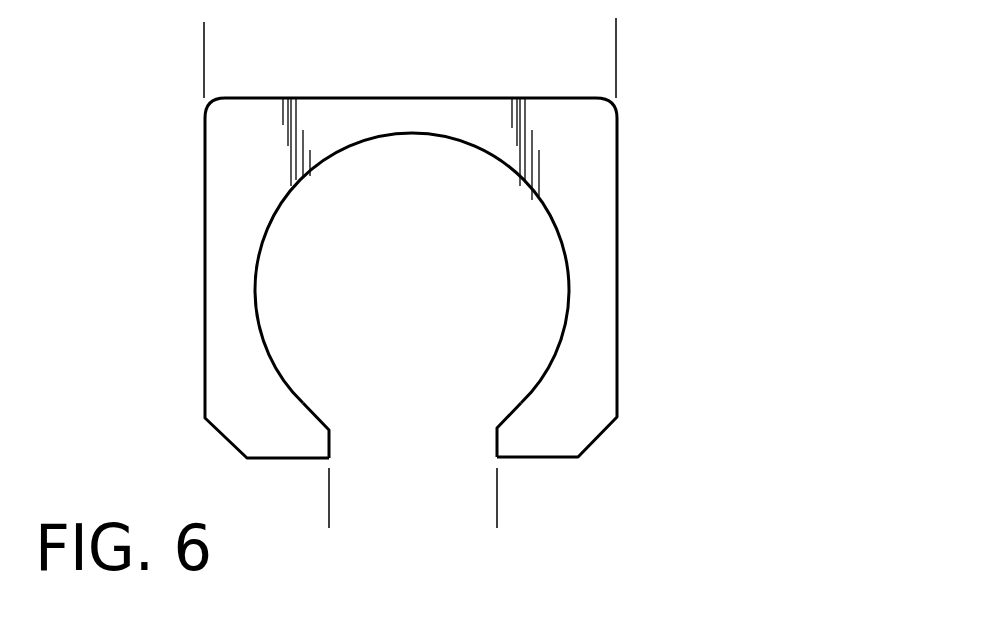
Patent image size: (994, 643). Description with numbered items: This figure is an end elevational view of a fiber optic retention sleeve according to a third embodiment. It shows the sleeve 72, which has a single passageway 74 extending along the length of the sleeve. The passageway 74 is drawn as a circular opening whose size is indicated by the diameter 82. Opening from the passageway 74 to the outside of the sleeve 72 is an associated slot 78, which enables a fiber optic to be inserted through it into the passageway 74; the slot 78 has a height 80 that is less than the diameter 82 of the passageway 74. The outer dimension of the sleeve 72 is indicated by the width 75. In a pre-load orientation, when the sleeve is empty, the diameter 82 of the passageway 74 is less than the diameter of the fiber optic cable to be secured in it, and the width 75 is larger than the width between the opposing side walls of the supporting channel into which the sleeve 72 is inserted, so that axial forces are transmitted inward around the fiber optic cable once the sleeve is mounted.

The sleeve 72 is at (650, 102).
The passageway 74 is at (290, 300).
The width 75 is at (616, 50).
The slot 78 is at (428, 457).
The height 80 is at (497, 515).
The diameter 82 is at (523, 187).